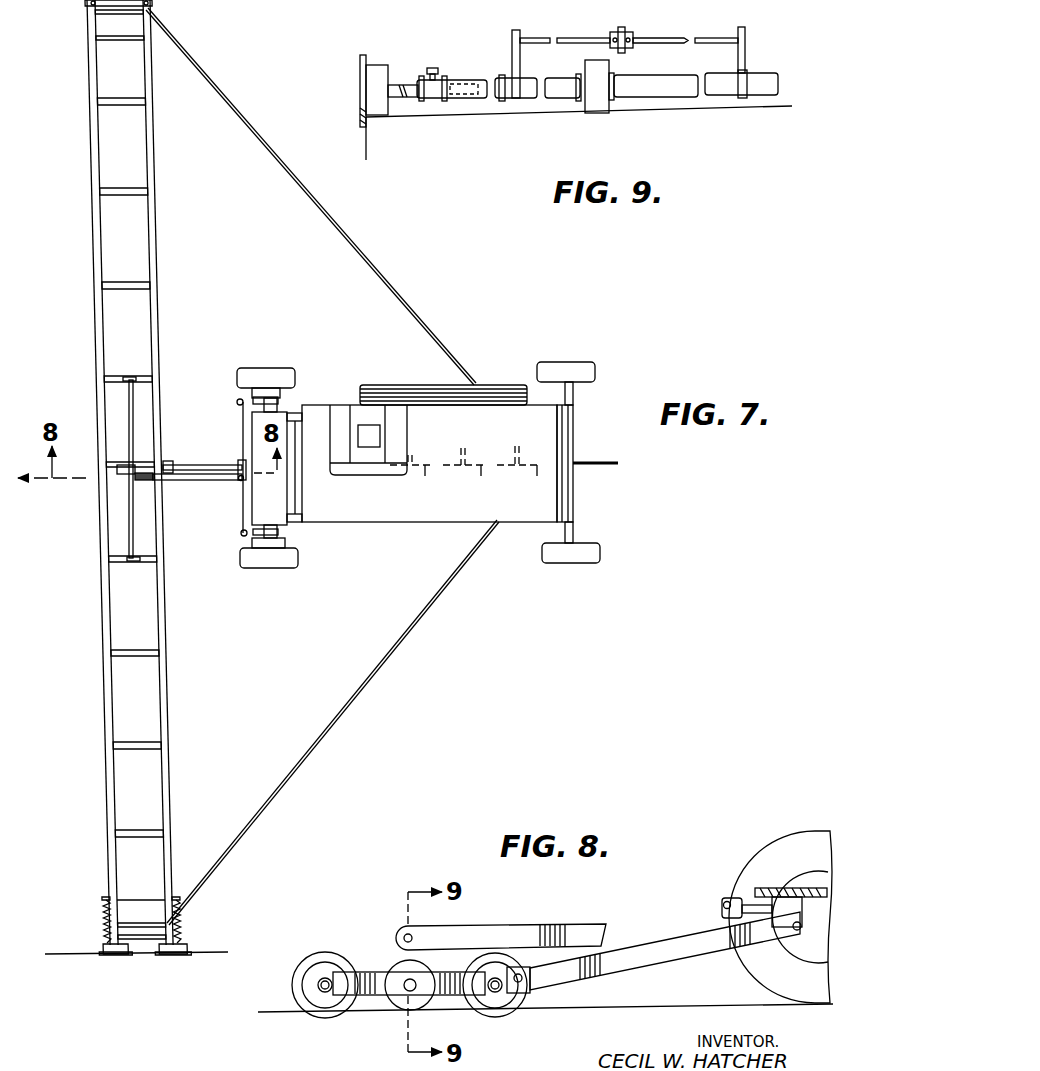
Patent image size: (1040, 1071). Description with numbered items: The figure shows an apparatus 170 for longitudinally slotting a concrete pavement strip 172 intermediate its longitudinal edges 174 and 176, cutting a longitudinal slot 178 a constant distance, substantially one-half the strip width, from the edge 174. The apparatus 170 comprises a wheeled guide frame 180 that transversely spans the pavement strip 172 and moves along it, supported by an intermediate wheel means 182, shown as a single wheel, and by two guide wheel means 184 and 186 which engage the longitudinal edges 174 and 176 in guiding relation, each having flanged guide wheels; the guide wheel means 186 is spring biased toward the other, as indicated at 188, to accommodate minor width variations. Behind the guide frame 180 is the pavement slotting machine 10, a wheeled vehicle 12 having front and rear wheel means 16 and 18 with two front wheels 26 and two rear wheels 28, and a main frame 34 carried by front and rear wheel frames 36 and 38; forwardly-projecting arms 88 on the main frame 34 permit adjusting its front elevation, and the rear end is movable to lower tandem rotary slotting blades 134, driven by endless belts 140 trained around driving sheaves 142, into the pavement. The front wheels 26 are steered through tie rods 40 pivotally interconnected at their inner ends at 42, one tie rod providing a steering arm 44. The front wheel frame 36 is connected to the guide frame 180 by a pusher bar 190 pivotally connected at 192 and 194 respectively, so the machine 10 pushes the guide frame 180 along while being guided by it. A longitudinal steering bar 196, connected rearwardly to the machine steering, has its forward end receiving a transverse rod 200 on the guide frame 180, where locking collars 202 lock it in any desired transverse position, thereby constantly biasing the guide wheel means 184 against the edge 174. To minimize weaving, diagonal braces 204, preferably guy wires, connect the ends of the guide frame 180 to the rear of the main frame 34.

In FIG. 7, the pavement slotting machine 10 is at (406, 534).
In FIG. 7, the wheeled vehicle 12 is at (578, 446).
In FIG. 7, the front wheel means 16 is at (269, 367).
In FIG. 8, the front wheel means 16 is at (807, 825).
In FIG. 7, the rear wheel means 18 is at (577, 362).
In FIG. 7, the front wheels 26 is at (288, 369).
In FIG. 8, the front wheels 26 is at (775, 843).
In FIG. 7, the rear wheels 28 is at (594, 370).
In FIG. 7, the main frame 34 is at (439, 523).
In FIG. 7, the front wheel frame 36 is at (280, 514).
In FIG. 8, the front wheel frame 36 is at (762, 888).
In FIG. 7, the rear wheel frame 38 is at (575, 537).
In FIG. 7, the tie rods 40 is at (239, 404).
In FIG. 8, the tie rods 40 is at (720, 906).
In FIG. 7, the pivotal interconnection of tie rods 42 is at (240, 462).
In FIG. 8, the pivotal interconnection of tie rods 42 is at (727, 897).
In FIG. 7, the steering arm 44 is at (241, 481).
In FIG. 7, the forwardly-projecting arms 88 is at (298, 413).
In FIG. 7, the rotary slotting blades 134 is at (472, 476).
In FIG. 7, the endless belts 140 is at (394, 389).
In FIG. 7, the driving sheaves 142 is at (357, 396).
In FIG. 7, the slotting apparatus 170 is at (470, 331).
In FIG. 9, the pavement strip 172 is at (443, 113).
In FIG. 8, the pavement strip 172 is at (283, 1012).
In FIG. 9, the longitudinal edge 174 is at (365, 140).
In FIG. 7, the longitudinal edge 176 is at (80, 955).
In FIG. 7, the longitudinal slot 178 is at (590, 462).
In FIG. 7, the guide frame 180 is at (96, 338).
In FIG. 9, the guide frame 180 is at (468, 78).
In FIG. 8, the guide frame 180 is at (373, 971).
In FIG. 7, the intermediate wheel means 182 is at (137, 468).
In FIG. 9, the intermediate wheel means 182 is at (602, 115).
In FIG. 8, the intermediate wheel means 182 is at (404, 1000).
In FIG. 9, the guide wheel means 184 is at (364, 56).
In FIG. 8, the guide wheel means 184 is at (325, 952).
In FIG. 7, the guide wheel means 186 is at (165, 957).
In FIG. 7, the spring bias 188 is at (103, 926).
In FIG. 7, the pusher bar 190 is at (185, 466).
In FIG. 8, the pusher bar 190 is at (650, 960).
In FIG. 8, the pivotal connection 192 is at (793, 930).
In FIG. 7, the pivotal connection 194 is at (166, 461).
In FIG. 8, the pivotal connection 194 is at (533, 985).
In FIG. 7, the steering bar 196 is at (200, 482).
In FIG. 9, the steering bar 196 is at (623, 28).
In FIG. 8, the steering bar 196 is at (512, 922).
In FIG. 7, the transverse rod 200 is at (133, 408).
In FIG. 9, the transverse rod 200 is at (684, 38).
In FIG. 8, the transverse rod 200 is at (413, 936).
In FIG. 9, the locking collars 202 is at (612, 33).
In FIG. 7, the diagonal braces 204 is at (372, 264).